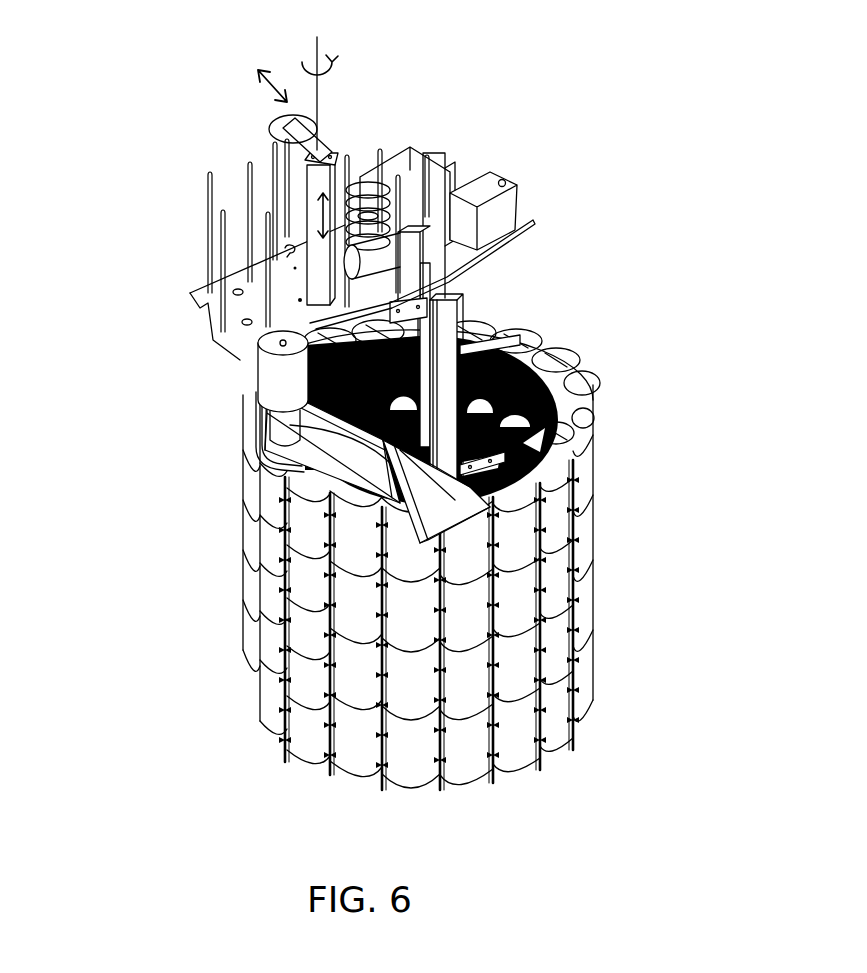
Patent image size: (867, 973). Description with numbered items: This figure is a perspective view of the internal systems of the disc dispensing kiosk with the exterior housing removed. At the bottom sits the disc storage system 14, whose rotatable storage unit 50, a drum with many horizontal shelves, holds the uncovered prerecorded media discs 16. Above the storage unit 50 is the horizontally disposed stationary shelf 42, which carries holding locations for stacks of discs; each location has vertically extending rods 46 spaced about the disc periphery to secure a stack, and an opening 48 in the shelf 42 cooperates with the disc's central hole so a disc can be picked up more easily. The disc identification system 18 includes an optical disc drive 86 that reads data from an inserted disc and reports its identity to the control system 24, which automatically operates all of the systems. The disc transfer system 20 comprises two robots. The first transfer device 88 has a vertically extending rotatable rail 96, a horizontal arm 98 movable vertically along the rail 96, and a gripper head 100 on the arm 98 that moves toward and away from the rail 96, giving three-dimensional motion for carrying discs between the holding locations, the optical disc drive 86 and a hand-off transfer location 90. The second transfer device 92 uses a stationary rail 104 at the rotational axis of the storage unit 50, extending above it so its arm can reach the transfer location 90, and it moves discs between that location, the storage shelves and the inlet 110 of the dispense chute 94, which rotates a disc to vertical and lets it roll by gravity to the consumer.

The disc storage system 14 is at (600, 627).
The prerecorded media disc 16 is at (255, 351).
The disc identification system 18 is at (445, 165).
The disc transfer system 20 is at (464, 317).
The control system 24 is at (519, 212).
The shelf 42 is at (212, 330).
The rods 46 is at (210, 230).
The opening 48 is at (238, 304).
The storage unit 50 is at (594, 538).
The optical disc drive 86 is at (412, 147).
The first transfer device 88 is at (337, 157).
The transfer location 90 is at (266, 378).
The second transfer device 92 is at (460, 333).
The dispense chute 94 is at (330, 458).
The rail 96 is at (313, 230).
The arm 98 is at (300, 155).
The gripper head 100 is at (296, 112).
The rail 104 is at (545, 371).
The inlet 110 is at (265, 415).